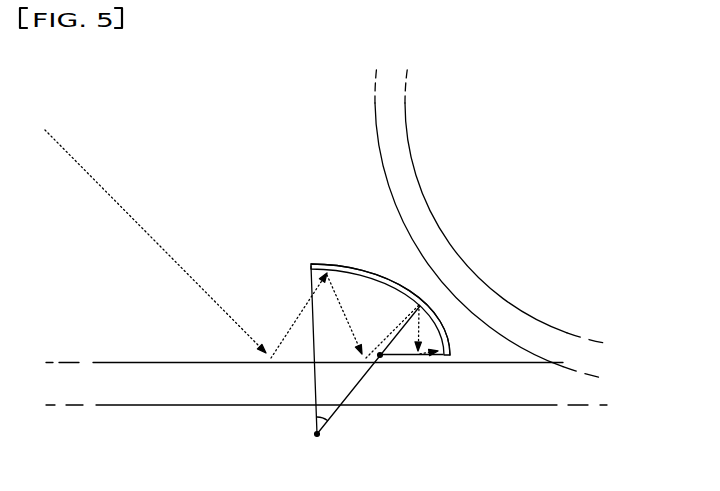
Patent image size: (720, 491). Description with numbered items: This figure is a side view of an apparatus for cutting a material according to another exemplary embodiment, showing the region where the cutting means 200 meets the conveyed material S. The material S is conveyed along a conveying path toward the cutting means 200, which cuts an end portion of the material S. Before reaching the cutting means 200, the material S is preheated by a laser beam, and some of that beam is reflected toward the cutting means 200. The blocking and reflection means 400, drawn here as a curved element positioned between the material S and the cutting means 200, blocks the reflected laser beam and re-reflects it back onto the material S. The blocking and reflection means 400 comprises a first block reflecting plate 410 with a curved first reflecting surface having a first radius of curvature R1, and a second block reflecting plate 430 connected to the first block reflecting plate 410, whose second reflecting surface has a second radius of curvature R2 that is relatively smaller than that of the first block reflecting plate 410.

The cutting means 200 is at (372, 126).
The blocking and reflection means 400 is at (378, 253).
The first block reflecting plate 410 is at (445, 329).
The second block reflecting plate 430 is at (352, 264).
The material S is at (129, 358).
The first radius of curvature R1 is at (325, 416).
The second radius of curvature R2 is at (390, 355).